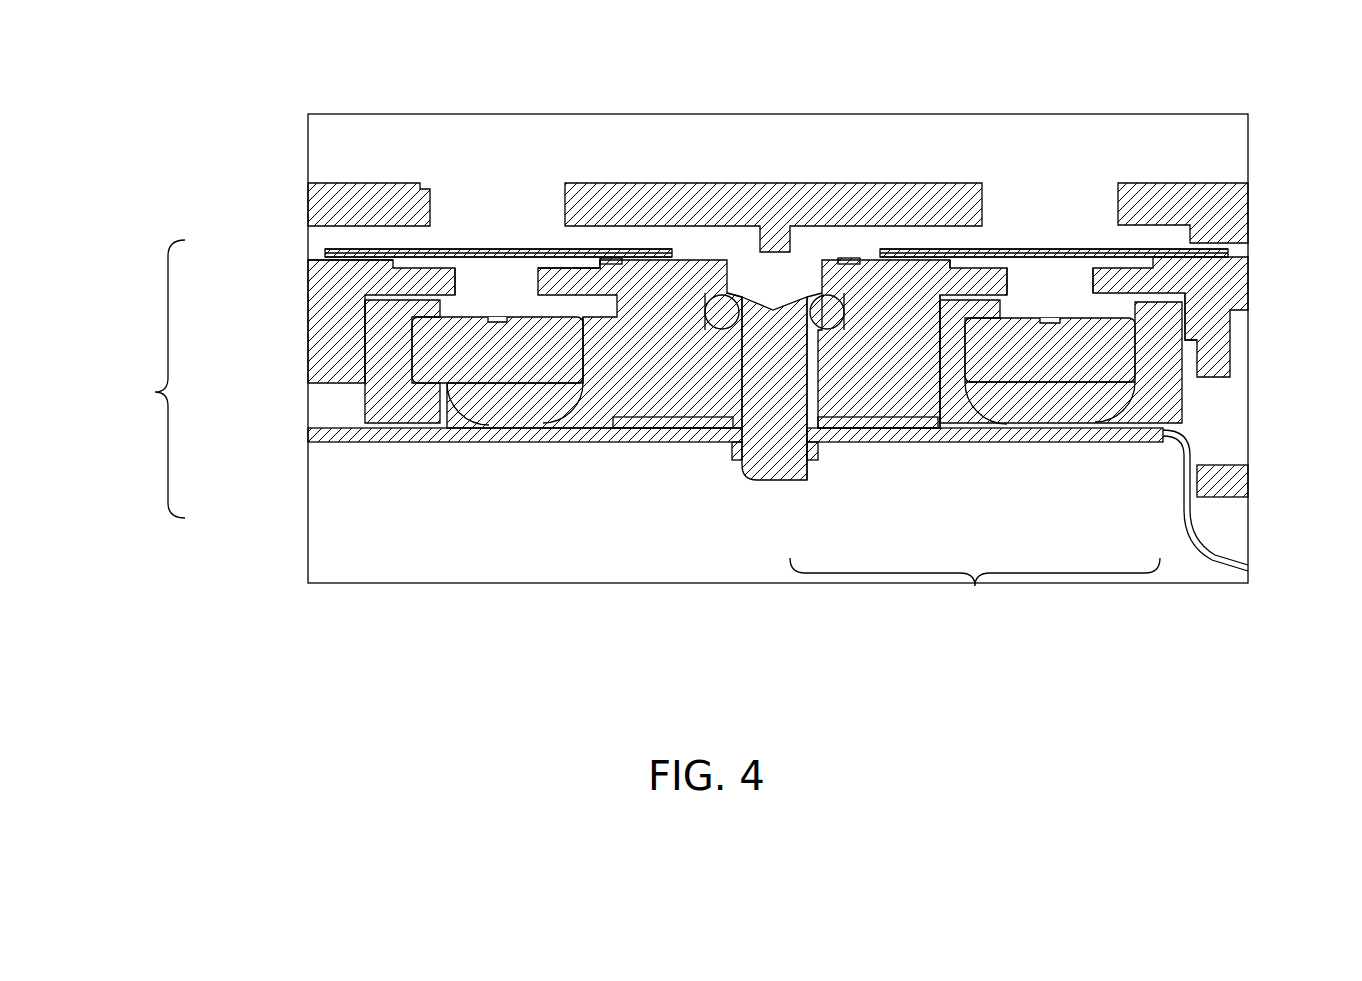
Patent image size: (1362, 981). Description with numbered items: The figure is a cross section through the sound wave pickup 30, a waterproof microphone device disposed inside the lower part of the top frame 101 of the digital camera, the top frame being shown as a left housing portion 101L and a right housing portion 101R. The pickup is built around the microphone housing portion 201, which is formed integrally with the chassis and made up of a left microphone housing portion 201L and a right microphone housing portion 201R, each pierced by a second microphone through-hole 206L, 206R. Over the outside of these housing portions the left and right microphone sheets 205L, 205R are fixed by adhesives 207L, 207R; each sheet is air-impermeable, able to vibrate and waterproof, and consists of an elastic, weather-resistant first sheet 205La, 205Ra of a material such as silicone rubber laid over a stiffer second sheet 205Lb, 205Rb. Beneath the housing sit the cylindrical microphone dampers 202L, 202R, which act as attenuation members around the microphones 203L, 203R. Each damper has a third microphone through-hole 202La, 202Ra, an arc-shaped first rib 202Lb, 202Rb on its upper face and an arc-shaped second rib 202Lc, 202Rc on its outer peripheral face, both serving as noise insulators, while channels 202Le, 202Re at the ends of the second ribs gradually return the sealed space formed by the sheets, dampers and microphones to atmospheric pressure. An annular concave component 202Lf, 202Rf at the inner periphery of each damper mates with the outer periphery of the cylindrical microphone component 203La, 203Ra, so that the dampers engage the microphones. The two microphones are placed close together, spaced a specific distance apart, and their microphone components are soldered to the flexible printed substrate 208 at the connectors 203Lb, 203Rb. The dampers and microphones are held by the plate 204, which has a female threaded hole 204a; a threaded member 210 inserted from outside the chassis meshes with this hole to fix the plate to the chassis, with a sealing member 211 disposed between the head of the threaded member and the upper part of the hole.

The sound wave pickup 30 is at (636, 430).
The top frame 101 is at (791, 166).
The left housing portion of top frame 101L is at (430, 200).
The right housing portion of top frame 101R is at (983, 205).
The microphone housing portion 201 is at (330, 330).
The left microphone housing portion 201L is at (600, 330).
The right microphone housing portion 201R is at (1165, 325).
The left microphone damper 202L is at (378, 403).
The third microphone through-hole 202La is at (518, 268).
The first rib 202Lb is at (378, 332).
The second rib 202Lc is at (638, 312).
The channel 202Le is at (330, 231).
The concave component 202Lf is at (548, 350).
The right microphone damper 202R is at (925, 437).
The third microphone through-hole 202Ra is at (1090, 300).
The first rib 202Rb is at (915, 268).
The second rib 202Rc is at (808, 345).
The channel 202Re is at (1175, 329).
The concave component 202Rf is at (935, 300).
The left microphone 203L is at (410, 374).
The microphone component 203La is at (462, 426).
The connector 203Lb is at (515, 398).
The right microphone 203R is at (986, 376).
The microphone component 203Ra is at (1067, 393).
The connector 203Rb is at (1060, 345).
The plate 204 is at (358, 448).
The female threaded hole 204a is at (743, 472).
The left microphone sheet 205L is at (325, 250).
The first sheet 205La is at (505, 250).
The second sheet 205Lb is at (490, 249).
The right microphone sheet 205R is at (1063, 290).
The first sheet 205Ra is at (975, 249).
The second sheet 205Rb is at (955, 249).
The second microphone through-hole 206L is at (455, 275).
The second microphone through-hole 206R is at (1010, 310).
The adhesive 207L is at (565, 258).
The adhesive 207R is at (852, 258).
The flexible printed substrate 208 is at (450, 437).
The threaded member 210 is at (745, 259).
The sealing member 211 is at (803, 300).